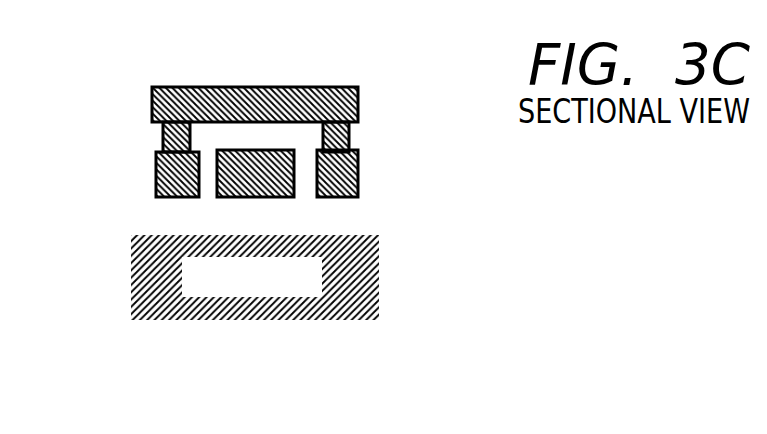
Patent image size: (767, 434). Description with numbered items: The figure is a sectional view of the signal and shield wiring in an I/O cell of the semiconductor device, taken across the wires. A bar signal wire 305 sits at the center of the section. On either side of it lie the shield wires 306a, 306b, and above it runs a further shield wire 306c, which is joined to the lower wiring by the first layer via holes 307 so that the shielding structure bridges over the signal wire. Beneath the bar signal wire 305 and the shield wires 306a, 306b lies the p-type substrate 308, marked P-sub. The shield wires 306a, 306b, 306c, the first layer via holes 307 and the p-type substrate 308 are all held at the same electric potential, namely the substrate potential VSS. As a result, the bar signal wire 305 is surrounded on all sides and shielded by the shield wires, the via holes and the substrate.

The bar signal wire 305 is at (255, 197).
The shield wire 306a is at (156, 175).
The shield wire 306b is at (358, 173).
The shield wire 306c is at (358, 106).
The first layer via holes 307 is at (349, 133).
The p-type substrate 308 is at (380, 277).